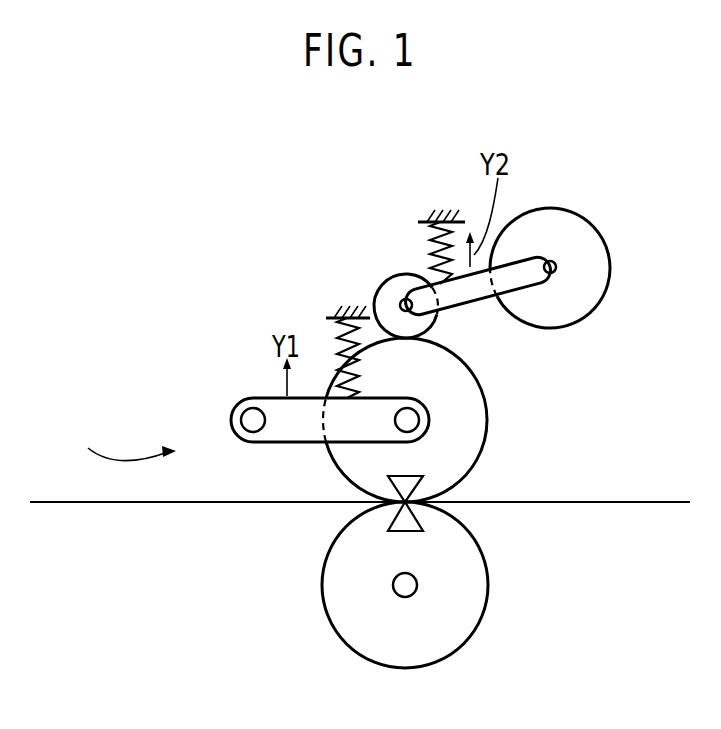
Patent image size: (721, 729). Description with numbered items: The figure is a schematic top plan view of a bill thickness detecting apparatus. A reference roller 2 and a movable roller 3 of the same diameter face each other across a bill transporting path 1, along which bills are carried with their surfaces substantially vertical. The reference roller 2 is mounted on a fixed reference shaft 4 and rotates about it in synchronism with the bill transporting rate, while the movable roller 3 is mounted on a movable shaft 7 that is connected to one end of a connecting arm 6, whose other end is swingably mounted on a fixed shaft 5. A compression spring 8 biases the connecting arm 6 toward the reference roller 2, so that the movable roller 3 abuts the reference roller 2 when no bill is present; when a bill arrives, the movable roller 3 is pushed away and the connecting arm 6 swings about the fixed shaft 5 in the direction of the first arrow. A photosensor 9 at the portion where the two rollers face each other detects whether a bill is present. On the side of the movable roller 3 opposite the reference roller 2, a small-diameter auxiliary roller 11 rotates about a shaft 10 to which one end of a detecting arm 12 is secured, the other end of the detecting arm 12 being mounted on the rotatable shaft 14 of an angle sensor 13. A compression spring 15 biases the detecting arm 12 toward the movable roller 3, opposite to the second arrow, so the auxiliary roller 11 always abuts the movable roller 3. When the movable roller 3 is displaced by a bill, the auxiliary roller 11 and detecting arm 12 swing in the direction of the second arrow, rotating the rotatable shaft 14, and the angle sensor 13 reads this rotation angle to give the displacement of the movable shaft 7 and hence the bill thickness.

The bill transporting path 1 is at (119, 446).
The reference roller 2 is at (468, 632).
The movable roller 3 is at (488, 412).
The fixed reference shaft 4 is at (397, 593).
The fixed shaft 5 is at (245, 415).
The connecting arm 6 is at (302, 443).
The movable shaft 7 is at (413, 423).
The compression spring 8 is at (330, 336).
The photosensor 9 is at (410, 520).
The shaft 10 is at (388, 284).
The auxiliary roller 11 is at (408, 277).
The detecting arm 12 is at (490, 296).
The angle sensor 13 is at (563, 209).
The rotatable shaft 14 is at (562, 273).
The compression spring 15 is at (432, 240).